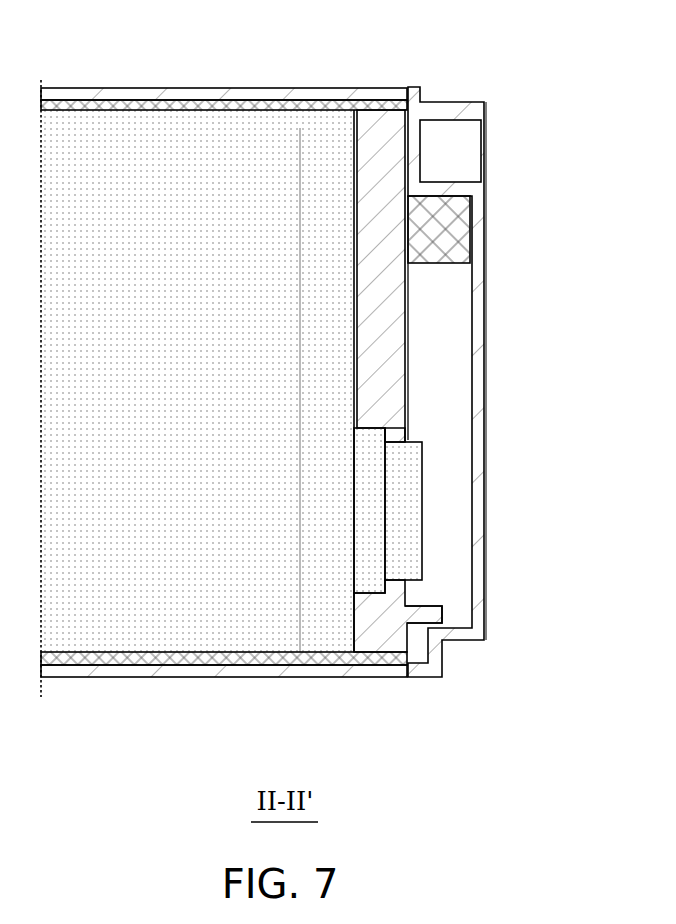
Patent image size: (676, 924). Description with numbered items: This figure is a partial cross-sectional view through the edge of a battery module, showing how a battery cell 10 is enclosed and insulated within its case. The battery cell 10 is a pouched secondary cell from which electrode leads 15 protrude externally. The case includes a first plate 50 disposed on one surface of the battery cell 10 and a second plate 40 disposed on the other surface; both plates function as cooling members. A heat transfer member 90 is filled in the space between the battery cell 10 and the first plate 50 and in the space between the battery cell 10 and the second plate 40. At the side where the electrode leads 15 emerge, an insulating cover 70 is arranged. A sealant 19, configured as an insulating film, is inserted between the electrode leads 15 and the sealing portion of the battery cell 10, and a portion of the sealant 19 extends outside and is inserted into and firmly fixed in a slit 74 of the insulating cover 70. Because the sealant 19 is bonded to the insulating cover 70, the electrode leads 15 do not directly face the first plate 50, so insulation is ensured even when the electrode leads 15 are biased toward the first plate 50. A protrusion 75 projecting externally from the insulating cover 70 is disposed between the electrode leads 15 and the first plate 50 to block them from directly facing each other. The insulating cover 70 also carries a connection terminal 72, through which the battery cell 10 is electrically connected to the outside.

The battery cell 10 is at (125, 642).
The second plate 40 is at (190, 98).
The heat transfer member 90 is at (270, 107).
The first plate 50 is at (190, 668).
The insulating cover 70 is at (390, 332).
The connection terminal 72 is at (388, 442).
The slit 74 is at (368, 433).
The electrode leads 15 is at (410, 537).
The sealant 19 is at (373, 567).
The protrusion 75 is at (443, 617).